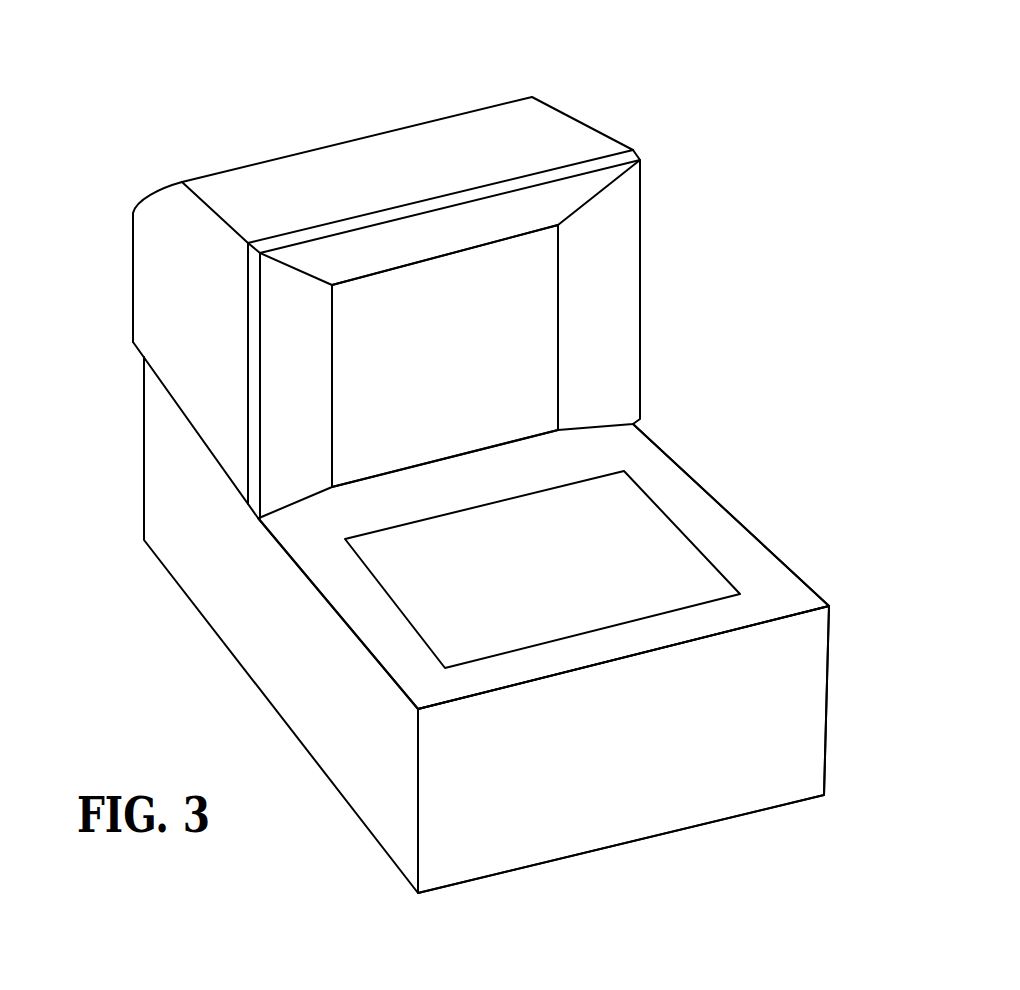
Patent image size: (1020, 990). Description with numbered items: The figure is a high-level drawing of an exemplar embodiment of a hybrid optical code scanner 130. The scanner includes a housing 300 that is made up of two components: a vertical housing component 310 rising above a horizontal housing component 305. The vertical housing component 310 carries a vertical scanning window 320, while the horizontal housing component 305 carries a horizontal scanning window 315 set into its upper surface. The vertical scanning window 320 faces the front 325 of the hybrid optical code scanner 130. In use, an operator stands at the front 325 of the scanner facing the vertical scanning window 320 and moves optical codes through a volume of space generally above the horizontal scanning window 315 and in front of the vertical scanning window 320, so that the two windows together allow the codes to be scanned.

The hybrid optical code scanner 130 is at (171, 63).
The housing 300 is at (163, 487).
The horizontal housing component 305 is at (683, 493).
The vertical housing component 310 is at (550, 132).
The horizontal scanning window 315 is at (698, 573).
The vertical scanning window 320 is at (503, 305).
The front 325 is at (613, 720).